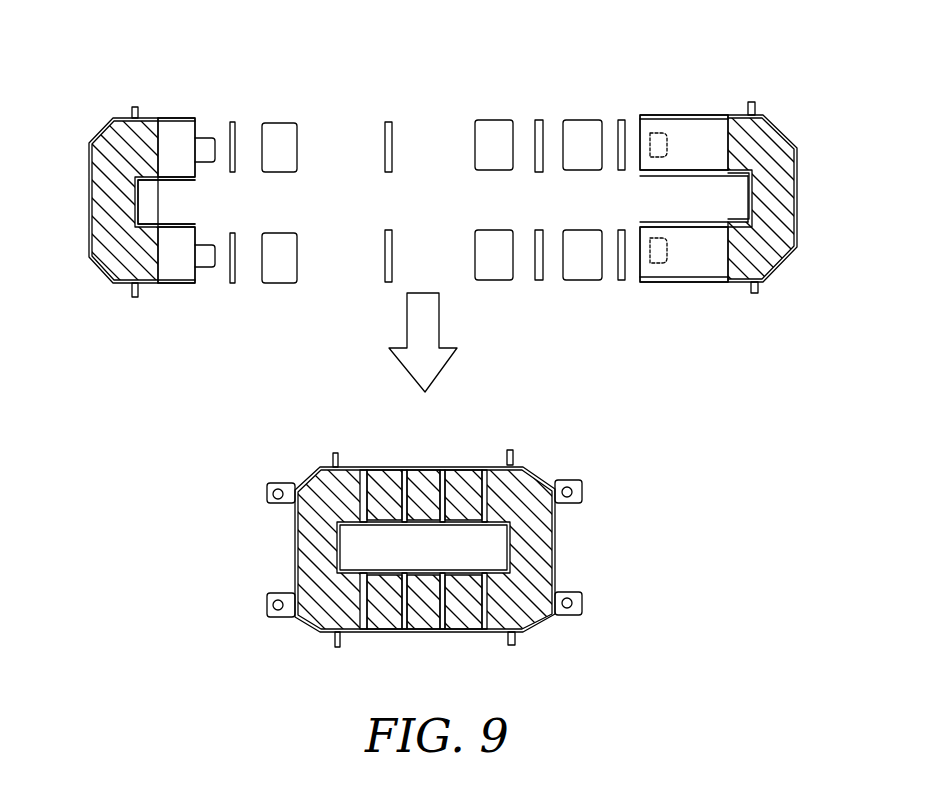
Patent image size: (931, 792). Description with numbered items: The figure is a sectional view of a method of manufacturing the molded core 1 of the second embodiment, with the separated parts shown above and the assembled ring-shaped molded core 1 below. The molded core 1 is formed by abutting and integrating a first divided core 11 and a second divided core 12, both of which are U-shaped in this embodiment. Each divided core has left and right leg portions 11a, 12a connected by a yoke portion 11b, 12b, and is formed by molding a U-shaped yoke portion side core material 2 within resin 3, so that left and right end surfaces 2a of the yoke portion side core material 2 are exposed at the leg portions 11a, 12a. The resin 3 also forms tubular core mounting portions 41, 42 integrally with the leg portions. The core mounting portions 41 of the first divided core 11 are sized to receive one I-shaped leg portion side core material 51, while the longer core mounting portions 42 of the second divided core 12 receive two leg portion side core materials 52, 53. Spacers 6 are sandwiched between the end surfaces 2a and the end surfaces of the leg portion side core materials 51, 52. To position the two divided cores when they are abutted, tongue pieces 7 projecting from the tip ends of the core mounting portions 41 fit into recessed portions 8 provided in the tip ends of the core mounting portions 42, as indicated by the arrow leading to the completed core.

The molded core 1 is at (533, 457).
The yoke portion side core material 2 is at (107, 175).
The end surfaces 2a is at (158, 250).
The resin 3 is at (142, 114).
The spacers 6 is at (240, 130).
The tongue pieces 7 is at (210, 267).
The recessed portions 8 is at (650, 257).
The first divided core 11 is at (85, 107).
The leg portions 11a is at (148, 287).
The yoke portion 11b is at (108, 135).
The second divided core 12 is at (768, 92).
The leg portions 12a is at (722, 117).
The yoke portion 12b is at (797, 217).
The core mounting portions 41 is at (187, 132).
The core mounting portions 42 is at (672, 123).
The leg portion side core material 51 is at (293, 123).
The leg portion side core material 52 is at (583, 125).
The leg portion side core material 53 is at (488, 137).